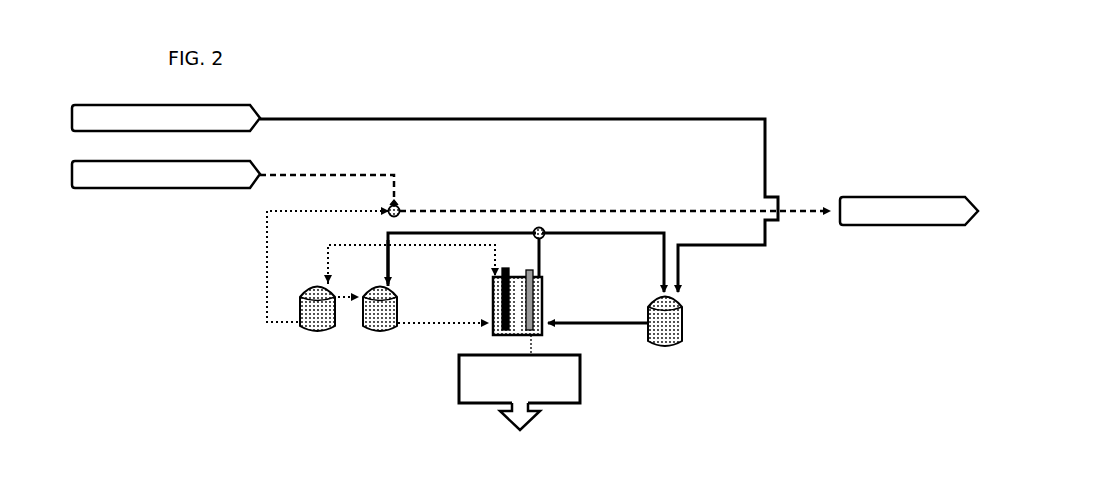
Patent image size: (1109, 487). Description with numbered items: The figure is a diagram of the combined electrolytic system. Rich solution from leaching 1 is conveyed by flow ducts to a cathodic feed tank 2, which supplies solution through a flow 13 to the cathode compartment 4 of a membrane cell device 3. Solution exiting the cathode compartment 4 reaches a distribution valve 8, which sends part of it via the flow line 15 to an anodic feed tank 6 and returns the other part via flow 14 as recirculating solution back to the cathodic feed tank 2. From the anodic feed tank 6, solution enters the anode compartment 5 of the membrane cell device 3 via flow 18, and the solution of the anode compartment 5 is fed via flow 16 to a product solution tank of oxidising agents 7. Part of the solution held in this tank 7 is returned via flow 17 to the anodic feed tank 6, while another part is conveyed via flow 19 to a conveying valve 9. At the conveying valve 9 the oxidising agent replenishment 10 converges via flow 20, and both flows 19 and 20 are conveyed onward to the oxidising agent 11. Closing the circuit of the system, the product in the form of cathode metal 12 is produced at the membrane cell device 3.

The rich solution from leaching 1 is at (440, 118).
The cathodic feed tank 2 is at (684, 315).
The membrane cell device 3 is at (516, 275).
The cathode compartment 4 is at (544, 283).
The anode compartment 5 is at (492, 285).
The anodic feed tank 6 is at (380, 336).
The product solution tank of oxidising agents 7 is at (318, 336).
The distribution valve 8 is at (543, 229).
The conveying valve 9 is at (399, 207).
The oxidising agent replenishment 10 is at (166, 174).
The oxidising agent 11 is at (689, 211).
The cathode metal 12 is at (519, 392).
The flow 13 is at (585, 320).
The flow 14 is at (605, 232).
The flow line 15 is at (455, 232).
The flow 16 is at (325, 256).
The flow 17 is at (345, 293).
The flow 18 is at (445, 328).
The flow 19 is at (266, 263).
The flow 20 is at (340, 172).